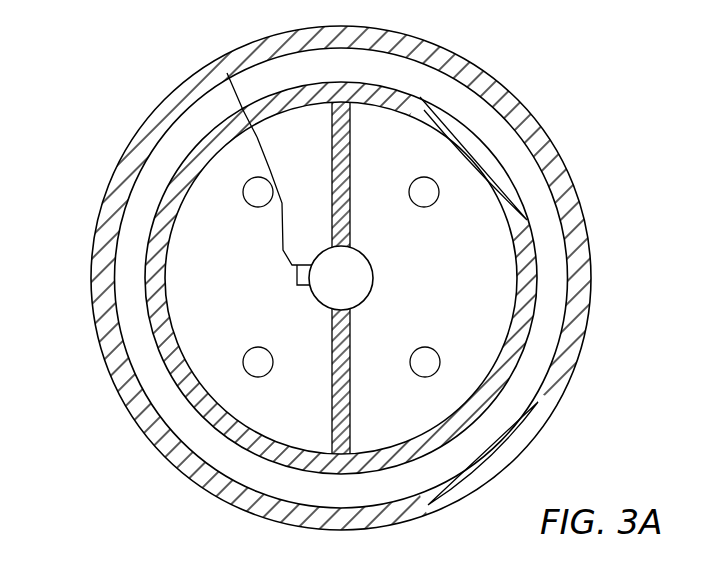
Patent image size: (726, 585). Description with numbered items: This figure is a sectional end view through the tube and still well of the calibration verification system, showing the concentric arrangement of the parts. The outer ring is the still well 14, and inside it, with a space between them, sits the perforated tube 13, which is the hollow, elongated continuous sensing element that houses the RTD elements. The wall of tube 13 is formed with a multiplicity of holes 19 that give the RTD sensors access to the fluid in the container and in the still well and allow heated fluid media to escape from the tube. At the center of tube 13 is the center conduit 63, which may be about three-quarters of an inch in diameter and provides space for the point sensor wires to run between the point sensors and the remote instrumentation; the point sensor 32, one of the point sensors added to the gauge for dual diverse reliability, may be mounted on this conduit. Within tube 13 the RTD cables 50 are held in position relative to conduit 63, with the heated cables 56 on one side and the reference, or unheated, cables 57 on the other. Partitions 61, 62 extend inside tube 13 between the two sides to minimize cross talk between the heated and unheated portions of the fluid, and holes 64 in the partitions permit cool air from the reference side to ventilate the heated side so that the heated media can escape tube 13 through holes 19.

The perforated tube 13 is at (437, 103).
The still well 14 is at (592, 243).
The holes 19 is at (466, 150).
The point sensor 32 is at (232, 90).
The RTD cables 50 is at (440, 193).
The heated cables 56 is at (244, 187).
The reference cables 57 is at (472, 158).
The partition 61 is at (373, 278).
The partition 62 is at (352, 403).
The center conduit 63 is at (373, 279).
The holes in the partitions 64 is at (330, 173).